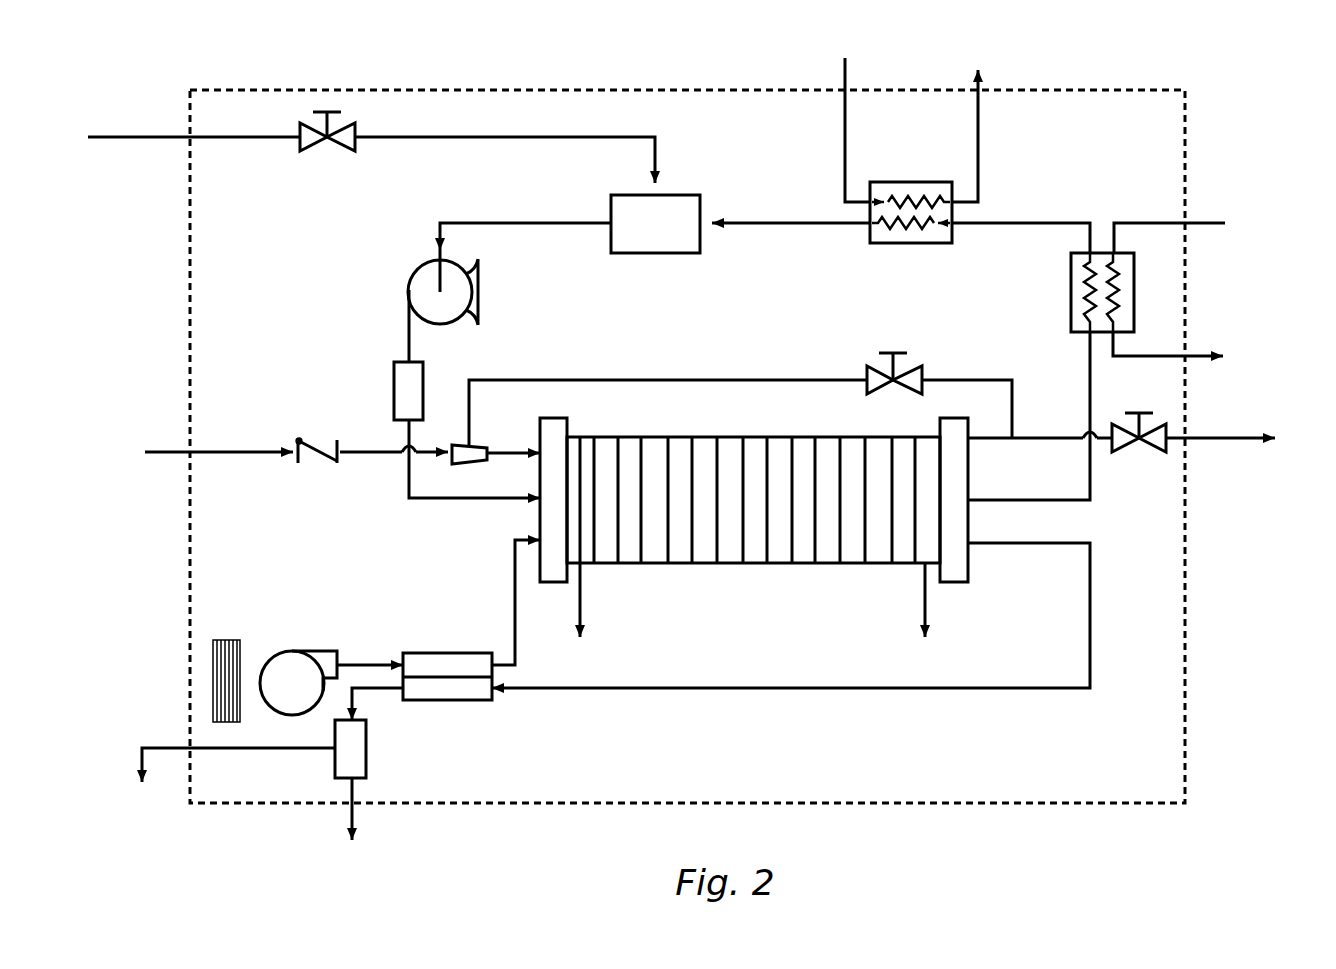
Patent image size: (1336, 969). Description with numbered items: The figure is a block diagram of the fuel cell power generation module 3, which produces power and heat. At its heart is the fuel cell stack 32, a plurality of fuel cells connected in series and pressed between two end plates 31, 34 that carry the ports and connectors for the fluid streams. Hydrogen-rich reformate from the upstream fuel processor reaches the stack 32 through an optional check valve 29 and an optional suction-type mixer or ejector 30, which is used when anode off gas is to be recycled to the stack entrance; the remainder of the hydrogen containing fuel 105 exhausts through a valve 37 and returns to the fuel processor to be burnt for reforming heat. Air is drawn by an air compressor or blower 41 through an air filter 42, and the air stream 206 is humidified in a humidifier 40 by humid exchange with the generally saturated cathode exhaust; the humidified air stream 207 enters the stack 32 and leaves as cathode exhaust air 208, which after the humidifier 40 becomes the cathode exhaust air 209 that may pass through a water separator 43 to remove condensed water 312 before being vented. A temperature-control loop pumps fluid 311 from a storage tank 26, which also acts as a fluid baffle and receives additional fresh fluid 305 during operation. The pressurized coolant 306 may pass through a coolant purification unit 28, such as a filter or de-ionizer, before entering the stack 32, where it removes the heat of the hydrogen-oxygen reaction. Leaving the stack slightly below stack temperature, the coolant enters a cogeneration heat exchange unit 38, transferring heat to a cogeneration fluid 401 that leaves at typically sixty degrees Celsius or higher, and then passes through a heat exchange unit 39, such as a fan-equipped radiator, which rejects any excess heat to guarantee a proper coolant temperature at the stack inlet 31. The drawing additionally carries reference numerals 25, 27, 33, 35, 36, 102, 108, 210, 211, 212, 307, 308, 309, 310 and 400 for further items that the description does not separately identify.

The fuel cell power generation module 3 is at (659, 23).
The valve 25 is at (293, 159).
The storage tank 26 is at (624, 201).
The pump 27 is at (406, 282).
The coolant purification unit 28 is at (371, 391).
The check valve 29 is at (343, 433).
The suction-type mixer (ejector) 30 is at (498, 429).
The end plate 31 is at (605, 488).
The fuel cell stack 32 is at (753, 480).
The bypass valve 33 is at (922, 354).
The end plate 34 is at (979, 518).
The drain 35 is at (888, 600).
The drain 36 is at (625, 600).
The valve 37 is at (1115, 421).
The cogeneration heat exchange unit 38 is at (1162, 292).
The heat exchange unit 39 is at (932, 232).
The humidifier 40 is at (436, 652).
The air compressor or blower 41 is at (274, 654).
The air filter 42 is at (182, 681).
The water separator 43 is at (399, 750).
The bypass line 102 is at (740, 390).
The remainder of hydrogen containing fuel 105 is at (1251, 458).
The inlet line 108 is at (188, 432).
The air stream 206 is at (348, 639).
The humidified air stream 207 is at (547, 607).
The cathode exhaust air 208 is at (831, 600).
The cathode exhaust air 209 is at (411, 711).
The drain line 210 is at (238, 767).
The coolant inlet line 211 is at (812, 130).
The coolant outlet line 212 is at (1012, 136).
The additional fresh fluid 305 is at (370, 143).
The pressurized coolant 306 is at (365, 326).
The feed line 307 is at (426, 467).
The line 308 is at (1029, 416).
The line 309 is at (1034, 215).
The line 310 is at (791, 199).
The fluid 311 is at (518, 215).
The condensed water 312 is at (309, 812).
The inlet line 400 is at (1204, 217).
The cogeneration fluid 401 is at (1200, 337).